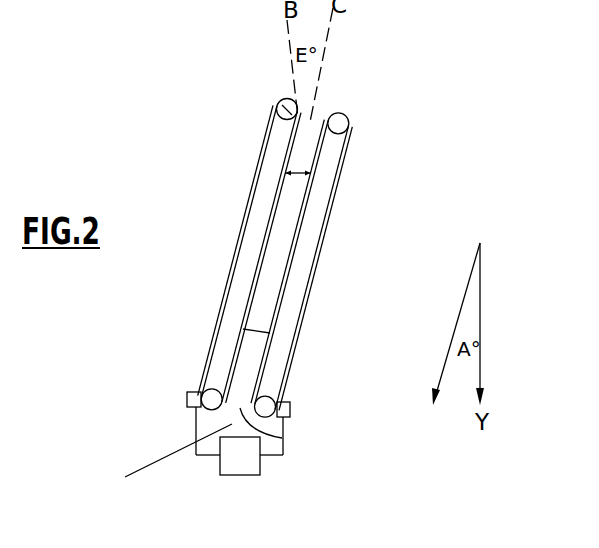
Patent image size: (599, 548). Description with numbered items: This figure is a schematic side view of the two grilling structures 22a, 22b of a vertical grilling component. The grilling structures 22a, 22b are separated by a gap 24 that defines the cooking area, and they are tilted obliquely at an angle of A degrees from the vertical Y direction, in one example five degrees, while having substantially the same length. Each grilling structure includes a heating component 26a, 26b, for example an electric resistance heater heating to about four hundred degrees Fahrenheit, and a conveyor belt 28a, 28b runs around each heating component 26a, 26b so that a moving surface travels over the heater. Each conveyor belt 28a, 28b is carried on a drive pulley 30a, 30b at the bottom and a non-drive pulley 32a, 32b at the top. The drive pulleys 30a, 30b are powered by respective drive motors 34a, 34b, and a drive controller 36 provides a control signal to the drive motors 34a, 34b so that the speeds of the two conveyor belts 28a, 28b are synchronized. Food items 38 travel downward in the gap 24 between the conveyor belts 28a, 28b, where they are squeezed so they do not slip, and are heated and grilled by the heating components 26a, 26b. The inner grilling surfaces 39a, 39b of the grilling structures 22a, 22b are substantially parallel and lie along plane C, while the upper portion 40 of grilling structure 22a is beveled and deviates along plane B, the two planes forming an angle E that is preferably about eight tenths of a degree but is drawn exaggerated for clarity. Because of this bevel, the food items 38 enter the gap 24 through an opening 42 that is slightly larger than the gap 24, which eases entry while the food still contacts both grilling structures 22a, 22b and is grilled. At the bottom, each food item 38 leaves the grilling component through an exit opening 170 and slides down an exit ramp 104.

The grilling structure 22a is at (160, 137).
The grilling structure 22b is at (436, 134).
The gap 24 is at (281, 254).
The heating component 26a is at (259, 269).
The heating component 26b is at (280, 292).
The conveyor belt 28a is at (262, 149).
The conveyor belt 28b is at (343, 163).
The drive pulley 30a is at (205, 390).
The drive pulley 30b is at (275, 389).
The non-drive pulley 32a is at (282, 99).
The non-drive pulley 32b is at (344, 116).
The drive motor 34a is at (187, 398).
The drive motor 34b is at (291, 410).
The drive controller 36 is at (252, 467).
The food items 38 is at (274, 316).
The inner grilling surface 39a is at (275, 208).
The inner grilling surface 39b is at (300, 218).
The upper portion 40 is at (270, 121).
The opening 42 is at (312, 120).
The exit ramp 104 is at (140, 467).
The exit opening 170 is at (282, 441).